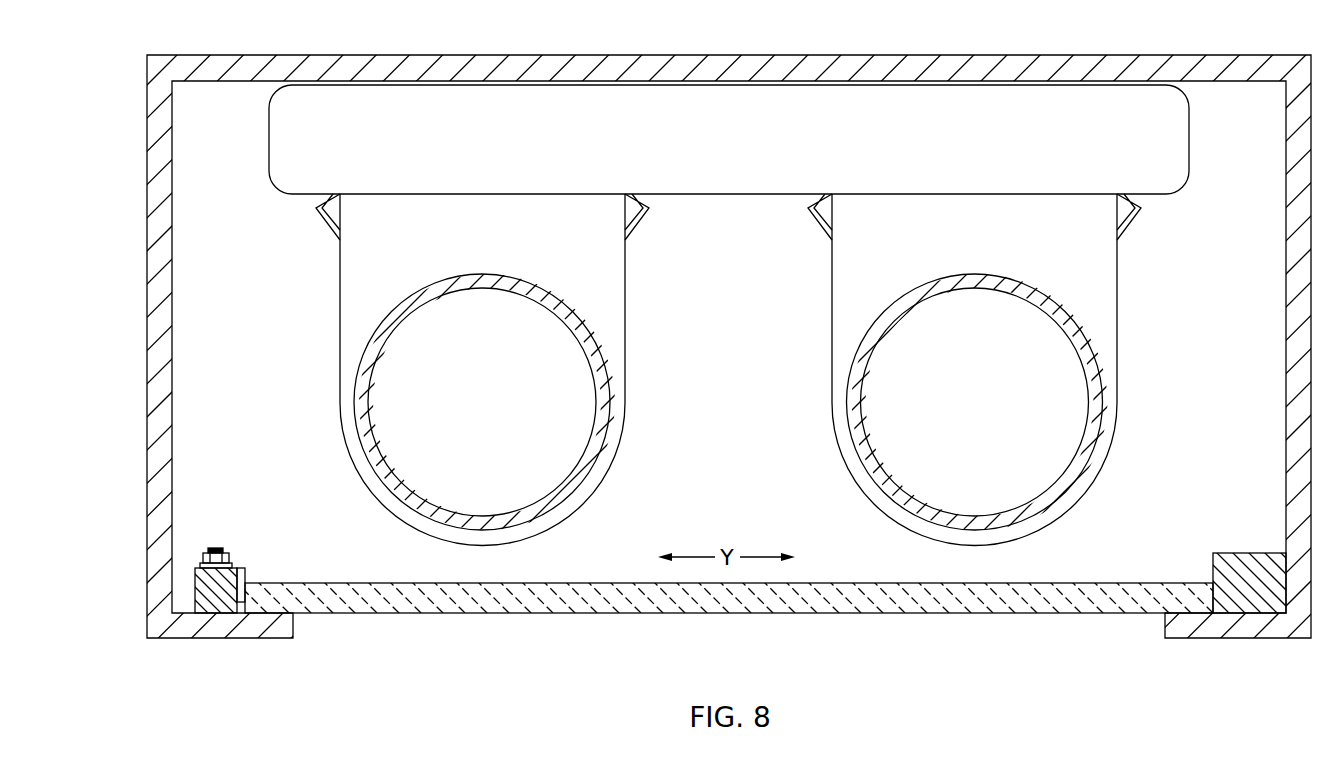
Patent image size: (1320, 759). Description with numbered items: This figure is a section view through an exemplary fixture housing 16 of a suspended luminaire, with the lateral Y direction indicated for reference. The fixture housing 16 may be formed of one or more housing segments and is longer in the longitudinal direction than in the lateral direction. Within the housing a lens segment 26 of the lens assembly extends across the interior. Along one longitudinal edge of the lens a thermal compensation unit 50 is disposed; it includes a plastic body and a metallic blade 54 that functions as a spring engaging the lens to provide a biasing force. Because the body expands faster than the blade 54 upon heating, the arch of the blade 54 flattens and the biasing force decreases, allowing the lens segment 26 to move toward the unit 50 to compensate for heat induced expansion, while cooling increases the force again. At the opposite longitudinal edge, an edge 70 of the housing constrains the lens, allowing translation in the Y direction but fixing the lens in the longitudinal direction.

The fixture housing 16 is at (121, 136).
The lens segment 26 is at (522, 600).
The thermal compensation unit 50 is at (245, 546).
The blade 54 is at (246, 580).
The edge 70 is at (1240, 562).